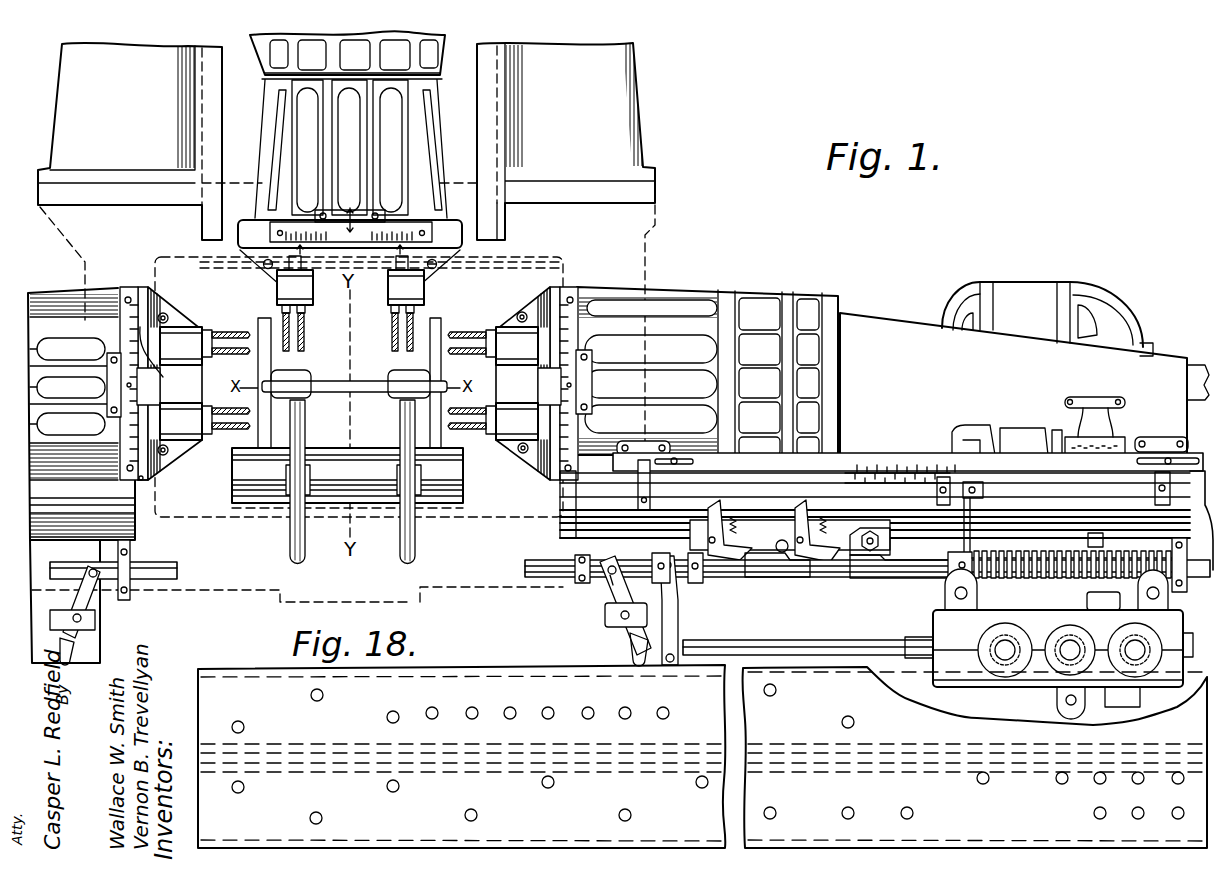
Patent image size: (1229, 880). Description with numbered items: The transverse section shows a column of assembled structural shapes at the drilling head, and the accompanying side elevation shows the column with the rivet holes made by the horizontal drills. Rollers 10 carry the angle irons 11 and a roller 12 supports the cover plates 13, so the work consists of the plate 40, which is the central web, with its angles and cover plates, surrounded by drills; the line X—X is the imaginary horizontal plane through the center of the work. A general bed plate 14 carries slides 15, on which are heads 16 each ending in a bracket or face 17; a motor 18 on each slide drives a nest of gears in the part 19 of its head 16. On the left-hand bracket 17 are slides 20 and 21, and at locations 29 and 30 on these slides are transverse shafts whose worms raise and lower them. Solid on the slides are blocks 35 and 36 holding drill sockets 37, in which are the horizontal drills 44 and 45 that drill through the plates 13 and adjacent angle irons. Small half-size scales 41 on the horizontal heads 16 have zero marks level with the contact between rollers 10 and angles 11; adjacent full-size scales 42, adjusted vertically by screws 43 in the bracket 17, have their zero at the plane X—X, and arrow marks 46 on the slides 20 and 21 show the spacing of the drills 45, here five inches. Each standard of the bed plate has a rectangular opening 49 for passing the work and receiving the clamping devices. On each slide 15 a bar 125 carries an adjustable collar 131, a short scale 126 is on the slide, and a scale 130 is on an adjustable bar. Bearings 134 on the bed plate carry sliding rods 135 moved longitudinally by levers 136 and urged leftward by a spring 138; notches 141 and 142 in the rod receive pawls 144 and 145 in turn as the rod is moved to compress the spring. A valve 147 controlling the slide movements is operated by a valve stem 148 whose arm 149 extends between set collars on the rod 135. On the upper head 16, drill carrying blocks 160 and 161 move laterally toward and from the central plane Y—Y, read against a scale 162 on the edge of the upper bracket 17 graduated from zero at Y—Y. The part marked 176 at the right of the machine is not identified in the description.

In FIG. 1, the rollers 10 is at (289, 545).
In FIG. 1, the angle irons 11 is at (308, 396).
In FIG. 18, the angle irons 11 is at (433, 770).
In FIG. 1, the roller 12 is at (338, 506).
In FIG. 1, the cover plates 13 is at (268, 348).
In FIG. 18, the cover plates 13 is at (440, 668).
In FIG. 1, the general bed plate 14 is at (858, 573).
In FIG. 1, the slides 15 is at (1013, 384).
In FIG. 1, the heads 16 is at (62, 318).
In FIG. 1, the bracket or face 17 is at (250, 230).
In FIG. 1, the motor 18 is at (1105, 308).
In FIG. 1, the part of the head 19 is at (433, 53).
In FIG. 1, the slide 20 is at (150, 290).
In FIG. 1, the slide 21 is at (152, 481).
In FIG. 1, the transverse shaft location 29 is at (167, 315).
In FIG. 1, the transverse shaft location 30 is at (168, 453).
In FIG. 1, the block 35 is at (349, 346).
In FIG. 1, the block 36 is at (349, 421).
In FIG. 1, the drill sockets 37 is at (213, 330).
In FIG. 1, the plate 40 is at (318, 387).
In FIG. 18, the plate 40 is at (318, 752).
In FIG. 1, the small scales 41 is at (105, 405).
In FIG. 1, the scales 42 is at (125, 300).
In FIG. 1, the screws 43 is at (349, 383).
In FIG. 1, the horizontal drills 44 is at (232, 333).
In FIG. 1, the drills 45 is at (230, 344).
In FIG. 1, the arrow marks 46 is at (160, 385).
In FIG. 1, the rectangular opening 49 is at (516, 267).
In FIG. 1, the bar 125 is at (1060, 482).
In FIG. 1, the short scale 126 is at (1108, 432).
In FIG. 1, the scale 130 is at (898, 455).
In FIG. 1, the collar 131 is at (937, 493).
In FIG. 1, the bearings 134 is at (1190, 597).
In FIG. 1, the sliding rods 135 is at (178, 571).
In FIG. 1, the levers 136 is at (605, 628).
In FIG. 1, the spring 138 is at (1003, 576).
In FIG. 1, the notch 141 is at (726, 566).
In FIG. 1, the notch 142 is at (822, 568).
In FIG. 1, the pawl 144 is at (758, 540).
In FIG. 1, the pawl 145 is at (850, 570).
In FIG. 1, the valve 147 is at (955, 628).
In FIG. 1, the valve stem 148 is at (774, 645).
In FIG. 1, the arm 149 is at (685, 621).
In FIG. 1, the drill carrying block 160 is at (289, 303).
In FIG. 1, the drill carrying block 161 is at (412, 303).
In FIG. 1, the scale 162 is at (425, 226).
In FIG. 1, the stop 176 is at (1195, 360).